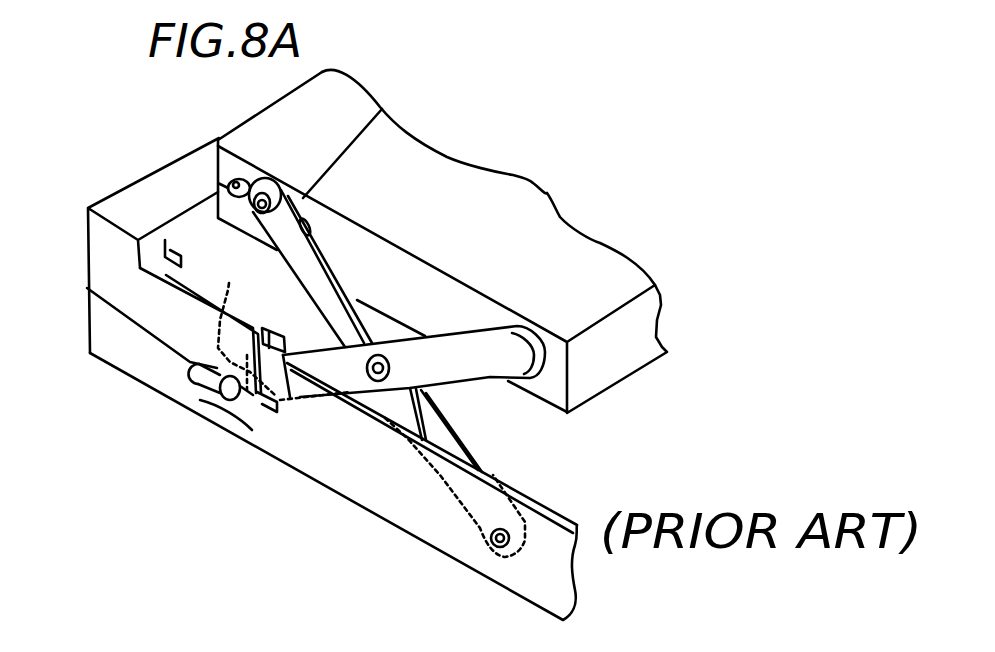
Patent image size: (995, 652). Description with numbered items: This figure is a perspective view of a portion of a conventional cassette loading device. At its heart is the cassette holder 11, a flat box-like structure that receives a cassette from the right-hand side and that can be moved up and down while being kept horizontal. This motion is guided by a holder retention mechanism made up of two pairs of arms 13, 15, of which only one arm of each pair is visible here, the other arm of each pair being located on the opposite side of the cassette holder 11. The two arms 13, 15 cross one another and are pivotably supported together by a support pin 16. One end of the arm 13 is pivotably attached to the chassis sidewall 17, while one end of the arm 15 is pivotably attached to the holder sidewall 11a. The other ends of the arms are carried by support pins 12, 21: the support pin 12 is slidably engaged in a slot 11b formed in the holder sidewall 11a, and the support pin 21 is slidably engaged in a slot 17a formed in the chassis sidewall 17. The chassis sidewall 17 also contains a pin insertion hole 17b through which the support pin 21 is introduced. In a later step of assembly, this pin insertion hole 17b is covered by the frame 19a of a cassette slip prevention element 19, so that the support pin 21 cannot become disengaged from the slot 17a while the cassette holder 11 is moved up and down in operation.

The cassette holder 11 is at (617, 365).
The holder sidewall 11a is at (432, 293).
The slot 11b is at (228, 188).
The support pin 12 is at (380, 108).
The arm 13 is at (318, 280).
The arm 15 is at (474, 367).
The support pin 16 is at (363, 380).
The chassis sidewall 17 is at (362, 492).
The slot 17a is at (187, 397).
The pin insertion hole 17b is at (245, 325).
The cassette slip prevention element 19 is at (157, 172).
The frame 19a is at (120, 263).
The support pin 21 is at (200, 402).